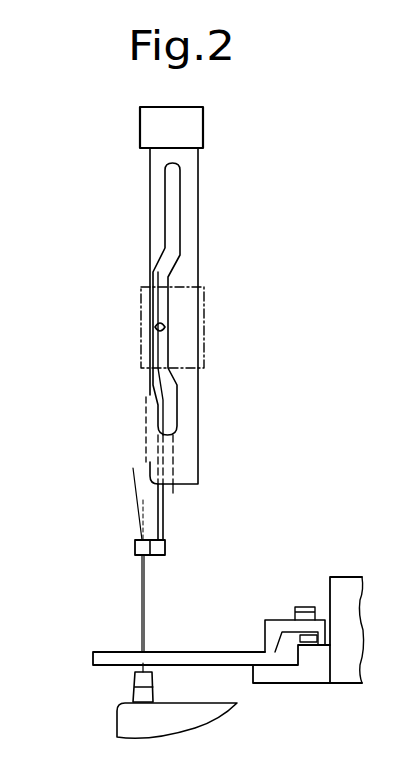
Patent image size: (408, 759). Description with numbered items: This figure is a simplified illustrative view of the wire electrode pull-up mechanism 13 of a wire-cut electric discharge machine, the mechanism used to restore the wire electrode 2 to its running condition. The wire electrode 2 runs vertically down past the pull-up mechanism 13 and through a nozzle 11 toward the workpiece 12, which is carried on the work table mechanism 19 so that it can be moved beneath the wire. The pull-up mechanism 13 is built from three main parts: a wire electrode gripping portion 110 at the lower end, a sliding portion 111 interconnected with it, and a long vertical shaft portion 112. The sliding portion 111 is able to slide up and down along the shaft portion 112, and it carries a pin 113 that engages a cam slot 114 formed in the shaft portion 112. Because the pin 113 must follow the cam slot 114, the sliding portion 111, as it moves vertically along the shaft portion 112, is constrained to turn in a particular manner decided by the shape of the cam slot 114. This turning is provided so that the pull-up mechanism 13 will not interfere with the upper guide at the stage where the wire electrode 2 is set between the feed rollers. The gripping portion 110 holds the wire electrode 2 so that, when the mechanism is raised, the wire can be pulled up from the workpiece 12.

The wire electrode 2 is at (143, 611).
The nozzle 11 is at (131, 678).
The workpiece 12 is at (182, 662).
The wire electrode pull-up mechanism 13 is at (106, 271).
The work table mechanism 19 is at (343, 684).
The wire electrode gripping portion 110 is at (134, 548).
The sliding portion 111 is at (205, 305).
The shaft portion 112 is at (199, 445).
The pin 113 is at (165, 327).
The cam slot 114 is at (168, 185).